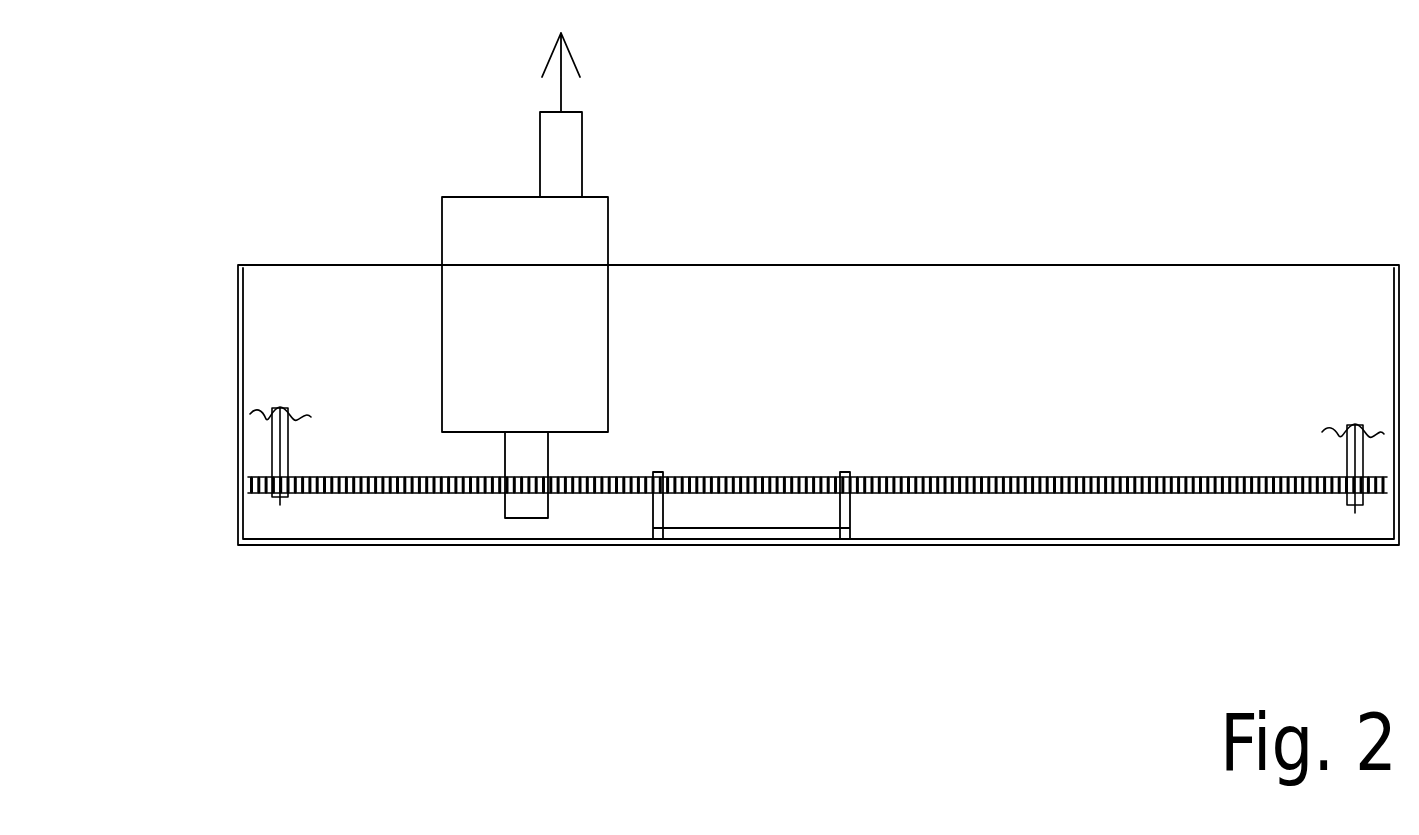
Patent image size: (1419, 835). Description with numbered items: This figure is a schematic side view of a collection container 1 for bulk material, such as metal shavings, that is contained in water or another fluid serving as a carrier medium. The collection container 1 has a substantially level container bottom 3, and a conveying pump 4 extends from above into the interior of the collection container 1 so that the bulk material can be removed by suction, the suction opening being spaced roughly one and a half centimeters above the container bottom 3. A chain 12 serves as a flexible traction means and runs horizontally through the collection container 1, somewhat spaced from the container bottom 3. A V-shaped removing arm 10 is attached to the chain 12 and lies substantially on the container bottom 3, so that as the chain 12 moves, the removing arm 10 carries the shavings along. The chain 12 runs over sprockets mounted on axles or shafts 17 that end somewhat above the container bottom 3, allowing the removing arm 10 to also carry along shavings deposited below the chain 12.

The collection container 1 is at (237, 642).
The container bottom 3 is at (580, 540).
The conveying pump 4 is at (478, 222).
The removing arm 10 is at (767, 532).
The chain 12 is at (420, 488).
The axles or shafts 17 is at (281, 443).